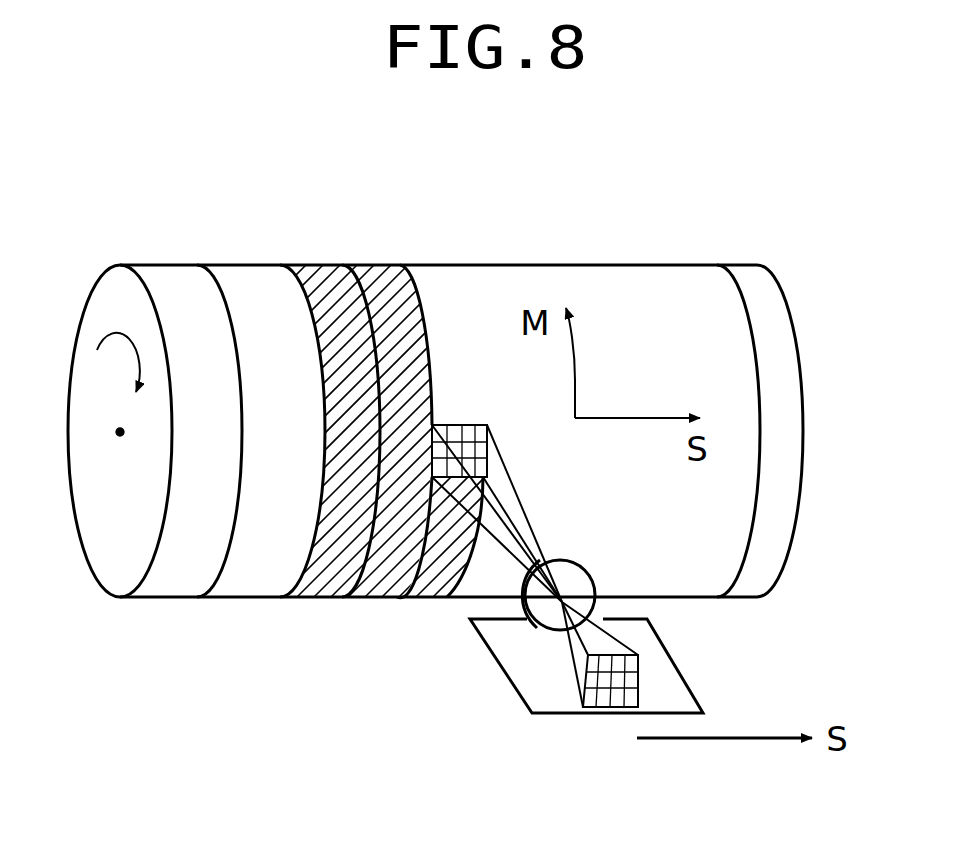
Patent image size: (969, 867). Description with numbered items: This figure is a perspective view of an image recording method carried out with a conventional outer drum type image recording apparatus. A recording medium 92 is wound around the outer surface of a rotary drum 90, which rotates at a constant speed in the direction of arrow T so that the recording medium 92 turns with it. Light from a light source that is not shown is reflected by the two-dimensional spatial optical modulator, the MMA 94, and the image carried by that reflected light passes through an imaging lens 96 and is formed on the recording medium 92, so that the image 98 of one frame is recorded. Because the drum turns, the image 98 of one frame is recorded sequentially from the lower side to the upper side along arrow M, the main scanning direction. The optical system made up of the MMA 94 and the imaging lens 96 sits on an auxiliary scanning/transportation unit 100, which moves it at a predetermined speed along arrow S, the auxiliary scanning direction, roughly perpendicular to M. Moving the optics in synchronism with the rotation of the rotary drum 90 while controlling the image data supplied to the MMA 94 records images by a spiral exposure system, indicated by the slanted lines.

The rotary drum 90 is at (110, 297).
The recording medium 92 is at (253, 287).
The two-dimensional spatial optical modulator (MMA) 94 is at (643, 685).
The imaging lens 96 is at (547, 630).
The image of one frame 98 is at (463, 414).
The auxiliary scanning/transportation unit 100 is at (542, 693).